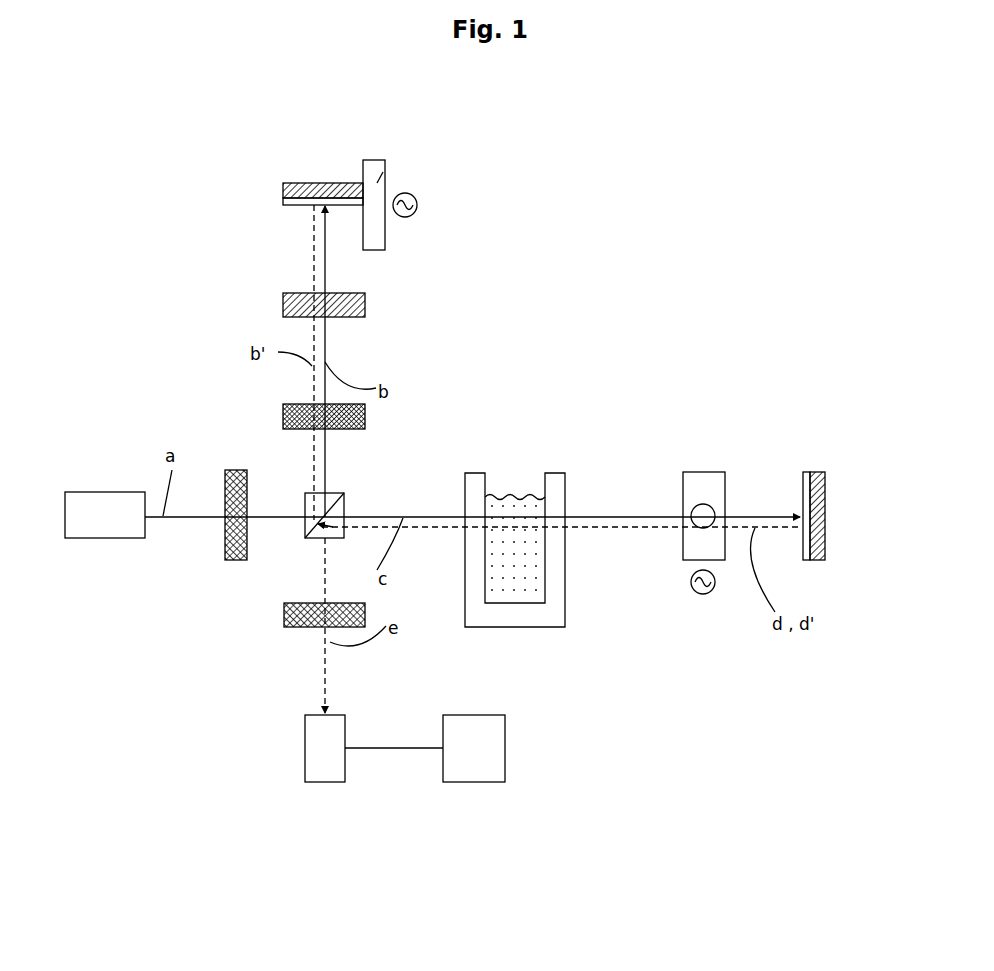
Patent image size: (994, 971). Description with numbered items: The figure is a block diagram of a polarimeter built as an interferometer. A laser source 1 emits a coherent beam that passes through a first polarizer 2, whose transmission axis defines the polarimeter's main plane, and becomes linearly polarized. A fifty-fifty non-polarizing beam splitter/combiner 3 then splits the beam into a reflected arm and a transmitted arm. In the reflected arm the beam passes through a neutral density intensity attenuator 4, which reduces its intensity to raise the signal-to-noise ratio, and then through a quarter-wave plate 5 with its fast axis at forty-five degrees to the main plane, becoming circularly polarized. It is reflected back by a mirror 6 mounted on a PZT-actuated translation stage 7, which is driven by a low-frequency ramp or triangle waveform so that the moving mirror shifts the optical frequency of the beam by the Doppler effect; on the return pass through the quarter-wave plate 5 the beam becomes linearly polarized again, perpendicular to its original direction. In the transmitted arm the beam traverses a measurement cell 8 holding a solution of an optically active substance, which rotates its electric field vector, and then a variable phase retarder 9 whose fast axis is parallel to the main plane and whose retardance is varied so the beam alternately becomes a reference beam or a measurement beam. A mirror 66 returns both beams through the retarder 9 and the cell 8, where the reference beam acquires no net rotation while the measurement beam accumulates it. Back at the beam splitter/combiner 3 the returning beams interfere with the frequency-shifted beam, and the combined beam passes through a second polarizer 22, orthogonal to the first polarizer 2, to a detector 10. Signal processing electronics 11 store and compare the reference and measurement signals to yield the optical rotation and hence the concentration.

The laser source 1 is at (97, 521).
The polarizer 2 is at (228, 556).
The 50:50 non-polarizing beam splitter/combiner 3 is at (318, 508).
The neutral density intensity attenuator 4 is at (366, 406).
The quarter λ wave-plate 5 is at (283, 305).
The mirror 6 is at (283, 202).
The PZT-actuated translation stage 7 is at (385, 172).
The measurement cell 8 is at (550, 610).
The variable phase retarder 9 is at (703, 495).
The detector 10 is at (312, 760).
The signal processing electronics 11 is at (450, 778).
The polarizer 22 is at (310, 628).
The mirror 66 is at (828, 492).